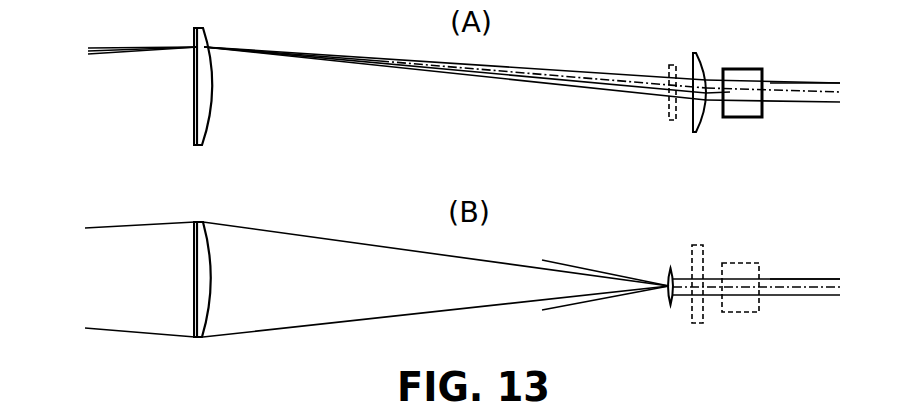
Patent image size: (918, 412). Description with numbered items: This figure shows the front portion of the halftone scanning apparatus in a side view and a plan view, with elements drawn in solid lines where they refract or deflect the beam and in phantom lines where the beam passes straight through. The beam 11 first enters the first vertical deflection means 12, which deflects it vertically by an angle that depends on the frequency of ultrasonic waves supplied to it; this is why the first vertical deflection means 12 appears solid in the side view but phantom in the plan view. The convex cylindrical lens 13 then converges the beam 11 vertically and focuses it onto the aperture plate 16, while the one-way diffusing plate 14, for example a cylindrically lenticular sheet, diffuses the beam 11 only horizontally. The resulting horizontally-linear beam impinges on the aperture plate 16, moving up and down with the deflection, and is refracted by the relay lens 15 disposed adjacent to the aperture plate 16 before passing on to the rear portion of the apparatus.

The beam 11 is at (805, 82).
The first vertical deflection means 12 is at (745, 68).
The convex cylindrical lens 13 is at (700, 54).
The one-way diffusing plate 14 is at (673, 65).
The relay lens 15 is at (207, 33).
The aperture plate 16 is at (194, 33).